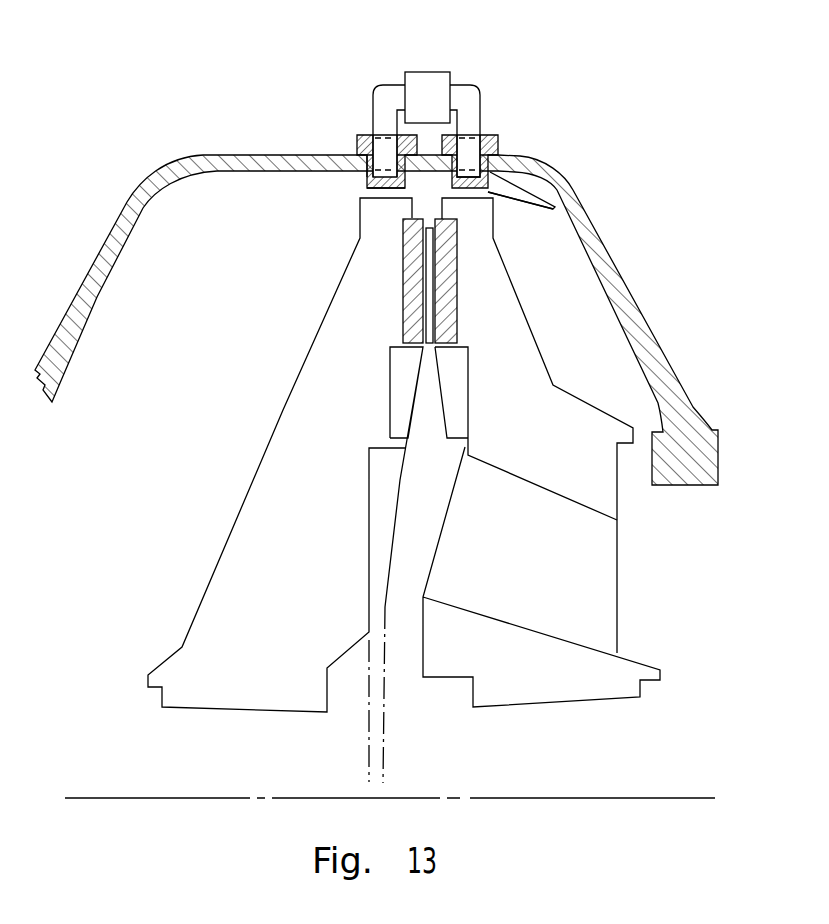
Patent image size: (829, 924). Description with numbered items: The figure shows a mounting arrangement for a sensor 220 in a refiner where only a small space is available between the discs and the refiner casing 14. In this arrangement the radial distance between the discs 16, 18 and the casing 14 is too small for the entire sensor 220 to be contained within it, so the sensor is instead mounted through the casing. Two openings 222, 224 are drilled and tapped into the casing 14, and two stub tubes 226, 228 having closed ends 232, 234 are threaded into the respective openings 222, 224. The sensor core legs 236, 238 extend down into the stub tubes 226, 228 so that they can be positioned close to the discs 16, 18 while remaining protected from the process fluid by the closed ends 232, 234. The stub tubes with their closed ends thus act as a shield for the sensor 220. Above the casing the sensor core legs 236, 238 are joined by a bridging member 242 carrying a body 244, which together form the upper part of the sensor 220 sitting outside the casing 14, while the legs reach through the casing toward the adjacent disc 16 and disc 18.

The refiner casing 14 is at (553, 175).
The disc 16 is at (507, 290).
The disc 18 is at (345, 270).
The sensor 220 is at (440, 102).
The opening 222 is at (362, 170).
The opening 224 is at (492, 186).
The stub tube 226 is at (355, 140).
The stub tube 228 is at (502, 145).
The closed end 232 is at (360, 195).
The closed end 234 is at (492, 198).
The sensor core leg 236 is at (382, 145).
The sensor core leg 238 is at (472, 138).
The bracket 242 is at (388, 83).
The block 244 is at (426, 72).